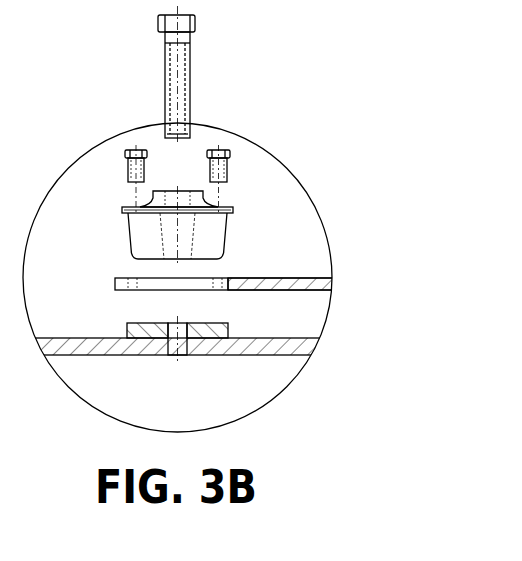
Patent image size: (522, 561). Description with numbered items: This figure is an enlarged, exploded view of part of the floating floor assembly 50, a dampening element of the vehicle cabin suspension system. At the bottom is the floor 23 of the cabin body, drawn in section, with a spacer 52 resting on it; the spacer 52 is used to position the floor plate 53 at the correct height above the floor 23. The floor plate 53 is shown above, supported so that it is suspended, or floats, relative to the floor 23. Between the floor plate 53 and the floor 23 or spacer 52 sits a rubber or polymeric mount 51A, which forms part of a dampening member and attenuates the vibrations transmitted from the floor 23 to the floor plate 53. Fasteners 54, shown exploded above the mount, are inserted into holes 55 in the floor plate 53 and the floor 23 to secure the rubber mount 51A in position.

The floating floor assembly 50 is at (71, 206).
The fasteners 54 is at (195, 22).
The rubber or polymeric mount 51A is at (234, 212).
The floor plate 53 is at (283, 278).
The spacer 52 is at (127, 324).
The floor 23 is at (80, 355).
The holes 55 is at (177, 355).